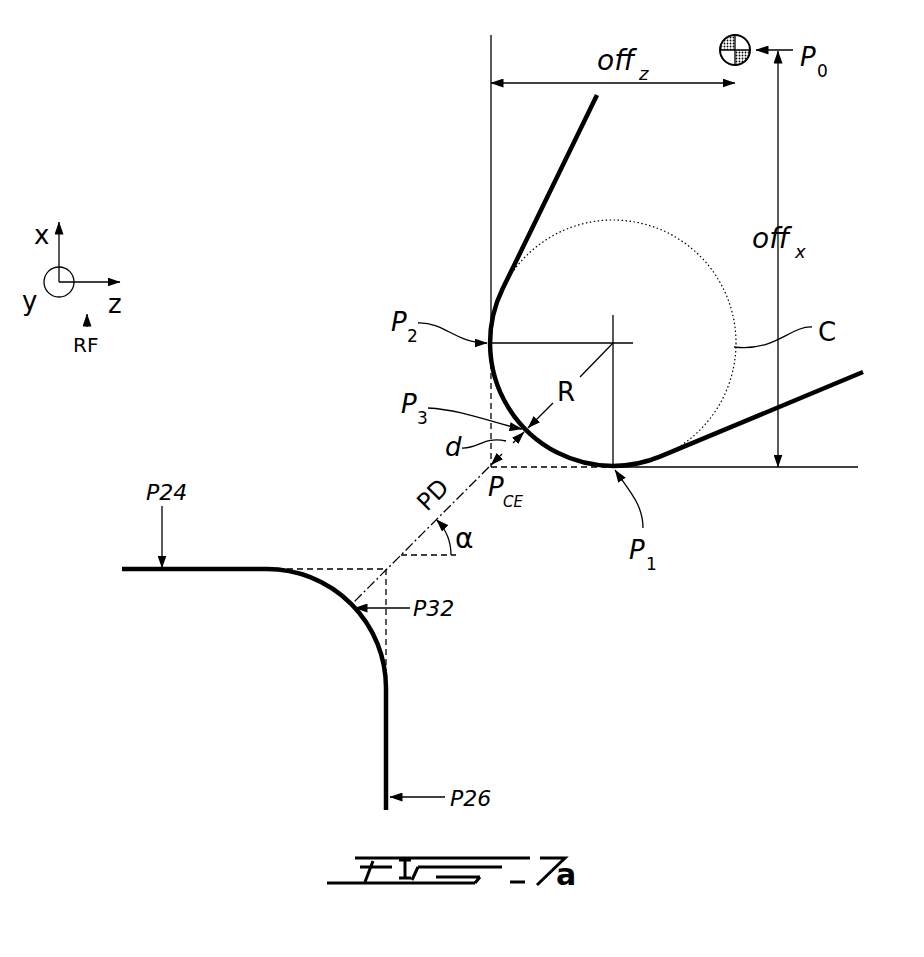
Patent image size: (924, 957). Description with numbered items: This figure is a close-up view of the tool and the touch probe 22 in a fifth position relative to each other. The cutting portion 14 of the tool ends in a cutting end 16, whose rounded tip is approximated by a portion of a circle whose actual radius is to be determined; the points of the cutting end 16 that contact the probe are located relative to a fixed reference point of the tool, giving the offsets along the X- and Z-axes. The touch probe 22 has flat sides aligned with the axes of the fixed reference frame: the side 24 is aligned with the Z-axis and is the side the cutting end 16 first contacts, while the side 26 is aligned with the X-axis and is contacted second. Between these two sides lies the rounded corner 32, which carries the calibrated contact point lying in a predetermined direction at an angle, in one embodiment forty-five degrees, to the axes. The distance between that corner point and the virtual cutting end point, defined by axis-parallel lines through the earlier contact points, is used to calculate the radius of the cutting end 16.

The cutting portion 14 is at (459, 245).
The cutting end 16 is at (815, 396).
The touch probe 22 is at (302, 629).
The side 24 is at (226, 568).
The side 26 is at (389, 755).
The corner 32 is at (347, 594).